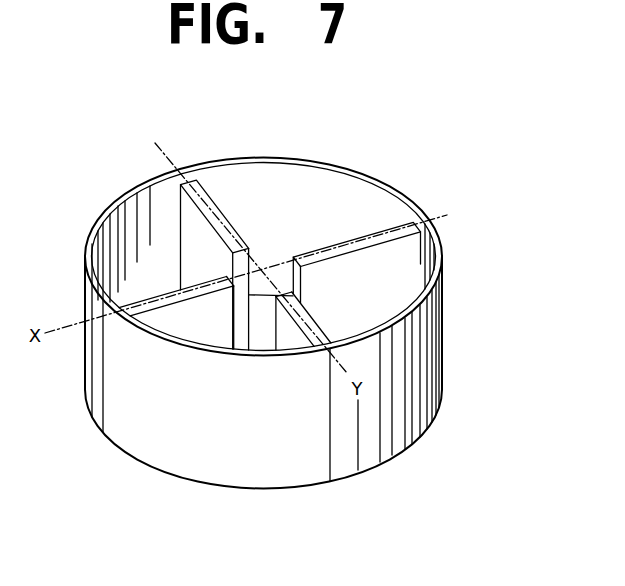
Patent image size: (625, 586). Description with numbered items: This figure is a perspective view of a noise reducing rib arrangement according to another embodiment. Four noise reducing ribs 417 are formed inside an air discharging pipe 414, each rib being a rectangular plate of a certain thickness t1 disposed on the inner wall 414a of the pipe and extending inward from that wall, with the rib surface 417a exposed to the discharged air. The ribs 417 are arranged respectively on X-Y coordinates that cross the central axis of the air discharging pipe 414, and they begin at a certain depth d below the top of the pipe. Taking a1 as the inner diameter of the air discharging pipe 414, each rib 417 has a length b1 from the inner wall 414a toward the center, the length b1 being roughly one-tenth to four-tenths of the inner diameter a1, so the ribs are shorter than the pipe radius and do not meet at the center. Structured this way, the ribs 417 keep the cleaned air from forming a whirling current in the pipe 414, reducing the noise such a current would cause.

The air discharging pipe 414 is at (258, 483).
The inner wall 414a is at (104, 238).
The noise reducing rib 417 is at (344, 210).
The rib top surface 417a is at (217, 207).
The inner diameter a1 is at (212, 342).
The thickness t1 is at (203, 323).
The length b1 is at (302, 272).
The depth d is at (417, 213).